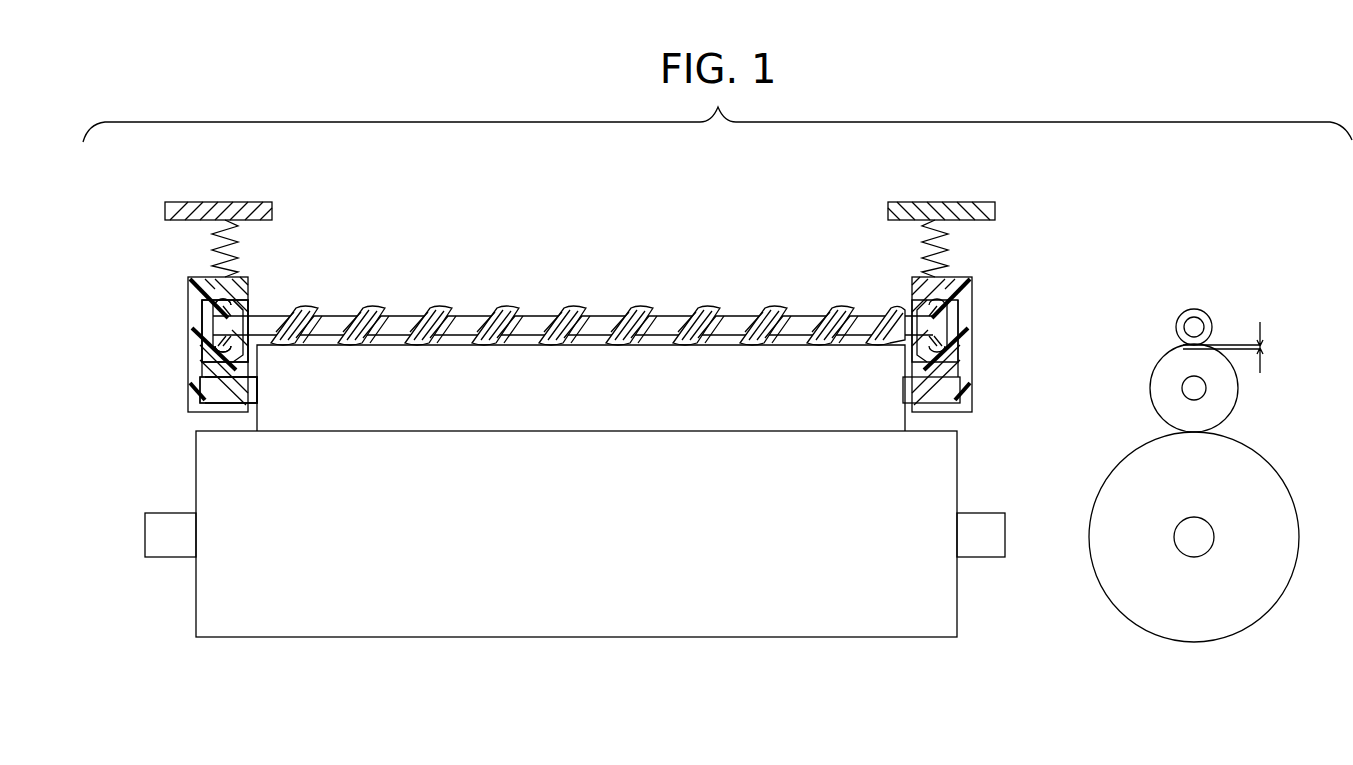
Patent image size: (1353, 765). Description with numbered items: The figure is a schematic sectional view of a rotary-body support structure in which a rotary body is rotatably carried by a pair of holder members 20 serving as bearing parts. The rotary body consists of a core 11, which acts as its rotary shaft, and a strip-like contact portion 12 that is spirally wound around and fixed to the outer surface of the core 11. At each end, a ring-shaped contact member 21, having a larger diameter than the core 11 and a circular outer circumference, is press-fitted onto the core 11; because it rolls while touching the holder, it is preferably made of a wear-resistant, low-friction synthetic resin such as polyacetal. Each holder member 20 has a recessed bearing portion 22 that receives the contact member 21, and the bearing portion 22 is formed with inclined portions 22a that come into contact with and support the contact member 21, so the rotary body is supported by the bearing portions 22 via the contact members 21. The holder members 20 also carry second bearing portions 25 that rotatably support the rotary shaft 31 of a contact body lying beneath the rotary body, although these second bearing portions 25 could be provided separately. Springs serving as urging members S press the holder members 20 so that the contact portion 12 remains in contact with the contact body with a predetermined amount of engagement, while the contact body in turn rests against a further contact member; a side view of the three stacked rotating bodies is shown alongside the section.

The core 11 is at (598, 318).
The contact portion 12 is at (628, 318).
The holder member 20 is at (186, 258).
The contact member 21 is at (202, 310).
The bearing portion 22 is at (205, 338).
The inclined portion 22a is at (237, 303).
The second bearing portion 25 is at (188, 398).
The rotary shaft 31 is at (227, 390).
The urging member S is at (240, 245).